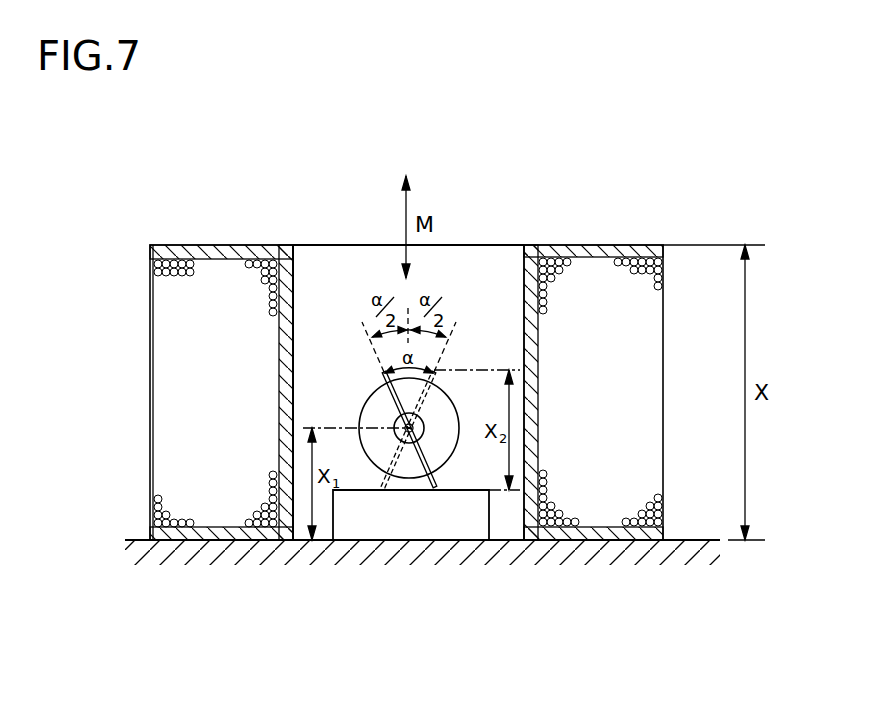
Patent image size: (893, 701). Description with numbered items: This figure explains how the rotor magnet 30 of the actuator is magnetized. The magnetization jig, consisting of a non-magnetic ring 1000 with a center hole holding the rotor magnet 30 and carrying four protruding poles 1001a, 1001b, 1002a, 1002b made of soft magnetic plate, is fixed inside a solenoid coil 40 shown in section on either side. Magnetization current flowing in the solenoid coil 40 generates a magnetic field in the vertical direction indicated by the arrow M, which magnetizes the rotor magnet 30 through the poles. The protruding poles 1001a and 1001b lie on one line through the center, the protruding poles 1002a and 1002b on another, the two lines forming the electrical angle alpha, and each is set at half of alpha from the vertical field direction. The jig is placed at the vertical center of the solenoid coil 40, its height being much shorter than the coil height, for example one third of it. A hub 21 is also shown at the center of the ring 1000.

The solenoid coil 40 is at (174, 392).
The rotor magnet 30 is at (405, 426).
The rotor hub 21 is at (399, 421).
The non-magnetic ring 1000 is at (443, 407).
The protruding pole 1001a is at (384, 378).
The protruding pole 1001b is at (431, 490).
The protruding pole 1002a is at (434, 378).
The protruding pole 1002b is at (386, 490).